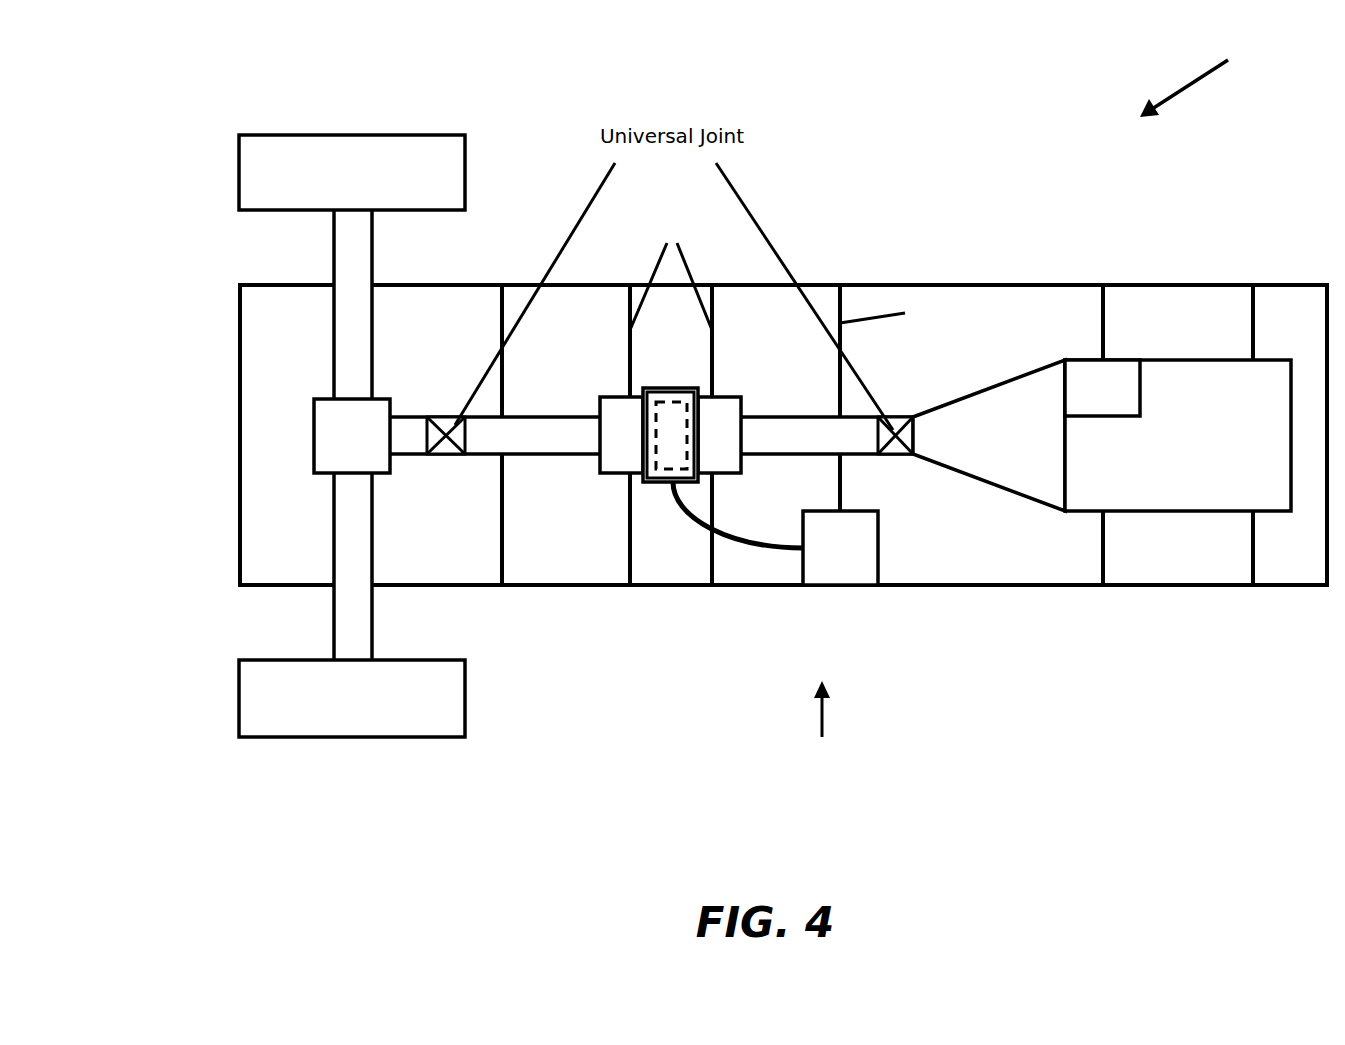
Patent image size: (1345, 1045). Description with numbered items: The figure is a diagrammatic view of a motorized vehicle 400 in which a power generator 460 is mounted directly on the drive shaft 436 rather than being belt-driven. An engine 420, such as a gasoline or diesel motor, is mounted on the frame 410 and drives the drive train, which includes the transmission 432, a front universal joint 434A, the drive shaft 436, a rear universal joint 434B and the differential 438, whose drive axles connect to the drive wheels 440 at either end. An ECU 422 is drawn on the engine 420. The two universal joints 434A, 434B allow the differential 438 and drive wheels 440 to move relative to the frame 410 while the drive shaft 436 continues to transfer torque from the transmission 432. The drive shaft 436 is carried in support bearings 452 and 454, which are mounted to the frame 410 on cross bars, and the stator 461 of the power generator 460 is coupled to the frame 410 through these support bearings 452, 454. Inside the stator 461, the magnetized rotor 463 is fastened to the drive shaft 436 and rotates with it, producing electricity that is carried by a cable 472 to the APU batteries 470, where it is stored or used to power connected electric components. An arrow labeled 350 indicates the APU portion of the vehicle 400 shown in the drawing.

The motorized vehicle 400 is at (1206, 75).
The frame 410 is at (832, 285).
The engine 420 is at (1178, 407).
The ECU 422 is at (1118, 372).
The transmission 432 is at (989, 435).
The front universal joint 434A is at (819, 324).
The rear universal joint 434B is at (518, 324).
The drive shaft 436 is at (651, 435).
The differential 438 is at (335, 437).
The drive wheels 440 is at (352, 436).
The support bearing 452 is at (627, 443).
The support bearing 454 is at (728, 437).
The power generator 460 is at (653, 502).
The stator 461 is at (657, 476).
The rotor 463 is at (619, 395).
The APU batteries 470 is at (838, 567).
The cable 472 is at (770, 545).
The APU 350 is at (820, 724).